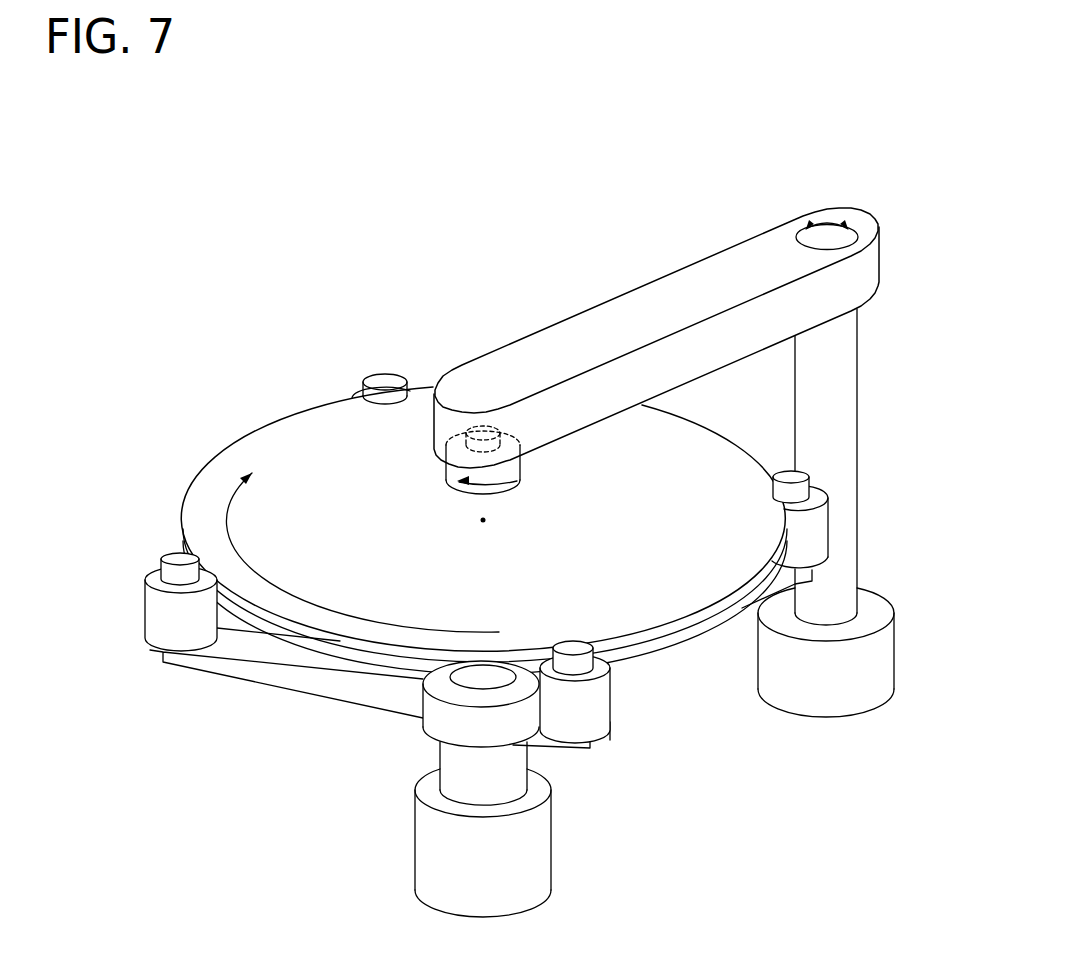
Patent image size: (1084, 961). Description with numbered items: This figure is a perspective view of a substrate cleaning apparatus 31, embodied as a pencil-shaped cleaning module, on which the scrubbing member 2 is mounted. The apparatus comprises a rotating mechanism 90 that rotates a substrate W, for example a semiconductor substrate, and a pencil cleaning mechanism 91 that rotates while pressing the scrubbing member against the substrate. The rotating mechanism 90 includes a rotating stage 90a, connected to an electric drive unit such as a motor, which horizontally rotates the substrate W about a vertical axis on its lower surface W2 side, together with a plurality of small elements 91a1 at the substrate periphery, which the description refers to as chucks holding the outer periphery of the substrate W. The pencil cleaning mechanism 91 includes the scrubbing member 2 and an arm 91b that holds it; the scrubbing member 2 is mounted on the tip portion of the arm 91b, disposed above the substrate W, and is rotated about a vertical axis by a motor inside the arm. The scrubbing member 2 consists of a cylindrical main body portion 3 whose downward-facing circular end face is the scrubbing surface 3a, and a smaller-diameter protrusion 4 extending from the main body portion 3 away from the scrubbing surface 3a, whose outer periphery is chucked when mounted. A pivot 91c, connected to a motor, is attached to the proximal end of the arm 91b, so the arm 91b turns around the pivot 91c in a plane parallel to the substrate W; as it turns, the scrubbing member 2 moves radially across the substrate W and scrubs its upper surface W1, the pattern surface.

The scrubbing member 2 is at (485, 477).
The main body portion 3 is at (523, 483).
The scrubbing surface 3a is at (500, 493).
The protrusion 4 is at (447, 438).
The substrate cleaning apparatus 31 is at (616, 305).
The rotating mechanism 90 is at (449, 686).
The rotating stage 90a is at (297, 695).
The pencil cleaning mechanism 91 is at (656, 338).
The roller 91a1 is at (390, 373).
The arm 91b is at (630, 310).
The pivot 91c is at (858, 364).
The substrate W is at (484, 539).
The upper surface W1 is at (641, 576).
The lower surface W2 is at (651, 652).